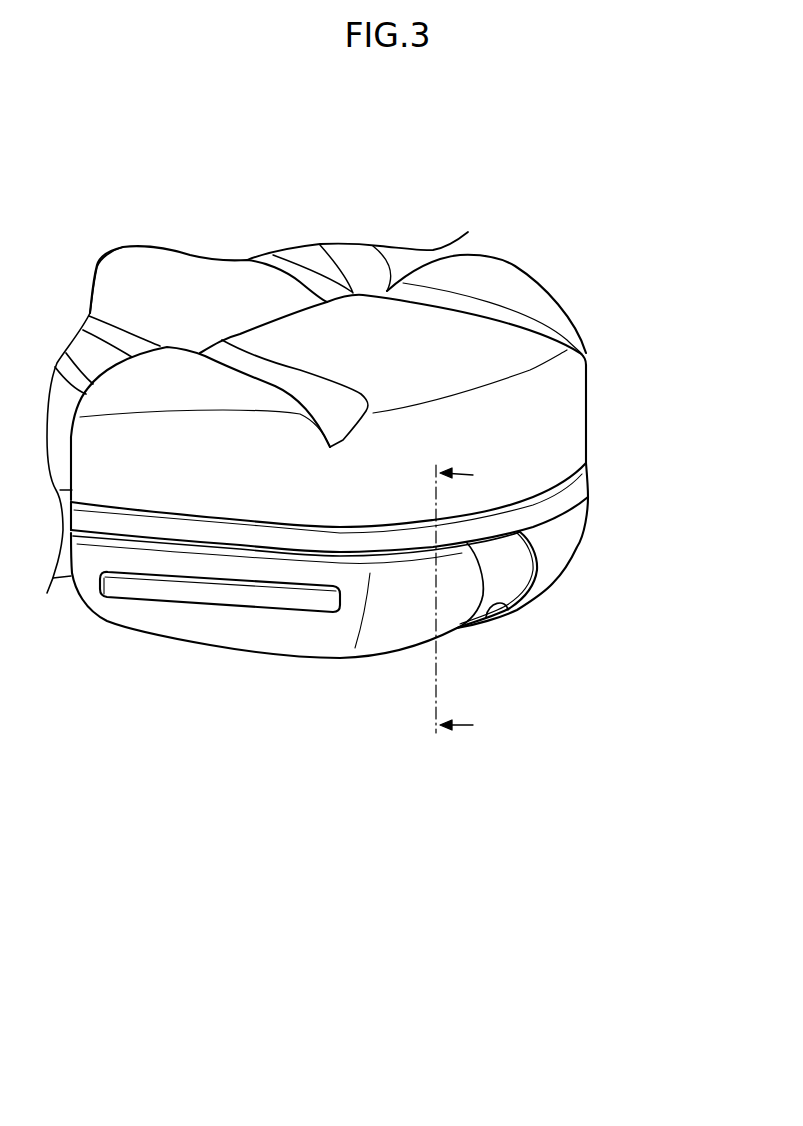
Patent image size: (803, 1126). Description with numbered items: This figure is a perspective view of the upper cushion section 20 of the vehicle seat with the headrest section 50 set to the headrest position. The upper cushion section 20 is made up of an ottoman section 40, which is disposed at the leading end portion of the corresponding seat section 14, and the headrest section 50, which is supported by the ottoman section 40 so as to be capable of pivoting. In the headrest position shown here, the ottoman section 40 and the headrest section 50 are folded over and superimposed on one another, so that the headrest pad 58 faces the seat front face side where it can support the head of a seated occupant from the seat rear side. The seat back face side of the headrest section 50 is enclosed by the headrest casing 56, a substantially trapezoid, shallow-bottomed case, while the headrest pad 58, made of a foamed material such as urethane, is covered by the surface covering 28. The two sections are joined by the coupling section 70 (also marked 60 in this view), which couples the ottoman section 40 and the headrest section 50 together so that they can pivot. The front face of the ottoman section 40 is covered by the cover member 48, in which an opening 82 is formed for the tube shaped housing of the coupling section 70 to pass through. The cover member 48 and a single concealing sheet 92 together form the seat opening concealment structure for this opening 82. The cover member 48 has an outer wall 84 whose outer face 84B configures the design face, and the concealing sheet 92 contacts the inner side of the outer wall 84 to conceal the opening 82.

The upper cushion section 20 is at (373, 559).
The seat section 14 is at (373, 493).
The surface covering 28 is at (467, 280).
The headrest pad 58 is at (485, 353).
The headrest section 50 is at (588, 392).
The headrest casing 56 is at (588, 478).
The coupling section 70 is at (578, 620).
The opening portion 60 is at (555, 620).
The concealing sheet 92 is at (507, 587).
The opening 82 is at (508, 616).
The outer face 84B is at (214, 651).
The outer wall 84 is at (177, 620).
The cover member 48 is at (243, 649).
The ottoman section 40 is at (385, 648).